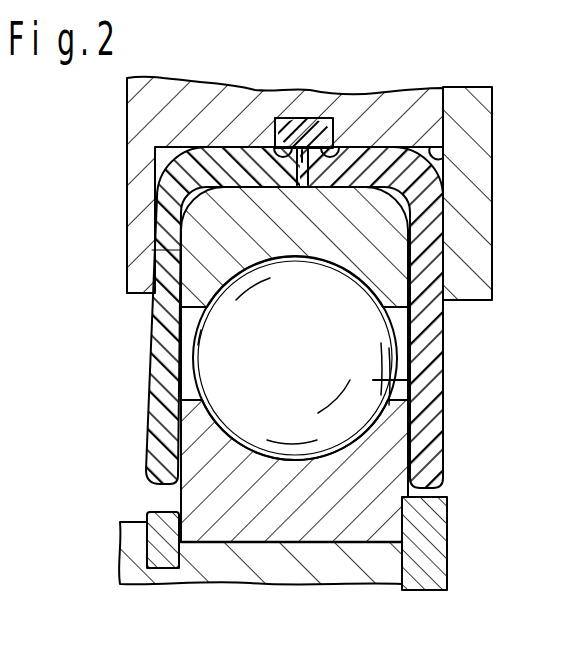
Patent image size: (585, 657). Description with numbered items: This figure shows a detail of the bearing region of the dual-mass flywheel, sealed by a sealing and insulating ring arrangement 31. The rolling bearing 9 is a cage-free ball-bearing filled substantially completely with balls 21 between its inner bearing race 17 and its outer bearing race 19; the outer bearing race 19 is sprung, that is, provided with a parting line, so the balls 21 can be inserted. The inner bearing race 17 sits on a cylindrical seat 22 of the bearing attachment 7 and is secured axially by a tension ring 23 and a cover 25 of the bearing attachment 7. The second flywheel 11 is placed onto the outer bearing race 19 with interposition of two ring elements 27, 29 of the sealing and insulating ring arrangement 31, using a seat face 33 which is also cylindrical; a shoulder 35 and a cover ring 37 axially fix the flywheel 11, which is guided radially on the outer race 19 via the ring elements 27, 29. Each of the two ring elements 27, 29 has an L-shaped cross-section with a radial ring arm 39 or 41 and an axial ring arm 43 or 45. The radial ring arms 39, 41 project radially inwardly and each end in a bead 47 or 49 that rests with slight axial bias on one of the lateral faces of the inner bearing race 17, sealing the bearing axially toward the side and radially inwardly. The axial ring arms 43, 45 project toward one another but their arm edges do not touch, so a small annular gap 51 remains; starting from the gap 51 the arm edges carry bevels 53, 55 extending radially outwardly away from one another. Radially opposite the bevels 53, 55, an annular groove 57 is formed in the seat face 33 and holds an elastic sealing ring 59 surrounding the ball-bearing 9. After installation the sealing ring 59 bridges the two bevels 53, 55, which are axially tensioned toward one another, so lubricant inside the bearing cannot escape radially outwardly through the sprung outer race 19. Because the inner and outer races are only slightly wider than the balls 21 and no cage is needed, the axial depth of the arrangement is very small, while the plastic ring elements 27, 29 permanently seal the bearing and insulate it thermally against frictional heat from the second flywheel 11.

The bearing attachment 7 is at (247, 566).
The rolling bearing 9 is at (373, 380).
The second flywheel 11 is at (143, 107).
The inner bearing race 17 is at (367, 510).
The outer bearing race 19 is at (220, 240).
The balls 21 is at (357, 350).
The cylindrical seat 22 is at (350, 545).
The tension ring 23 is at (152, 504).
The cover 25 is at (435, 568).
The ring element 27 is at (152, 313).
The ring element 29 is at (442, 322).
The sealing and insulating ring arrangement 31 is at (271, 95).
The seat face 33 is at (443, 160).
The shoulder 35 is at (137, 266).
The cover ring 37 is at (478, 220).
The radial ring arm 39 is at (157, 357).
The radial ring arm 41 is at (427, 410).
The axial ring arm 43 is at (303, 263).
The axial ring arm 45 is at (440, 180).
The bead 47 is at (165, 458).
The bead 49 is at (407, 470).
The annular gap 51 is at (302, 162).
The bevel 53 is at (253, 173).
The bevel 55 is at (360, 172).
The annular groove 57 is at (327, 157).
The elastic sealing ring 59 is at (298, 117).